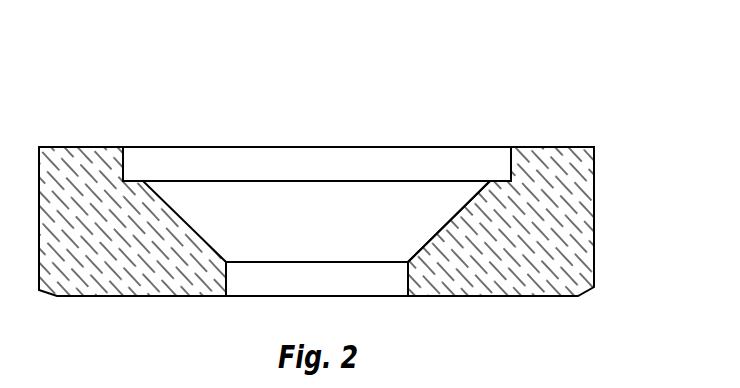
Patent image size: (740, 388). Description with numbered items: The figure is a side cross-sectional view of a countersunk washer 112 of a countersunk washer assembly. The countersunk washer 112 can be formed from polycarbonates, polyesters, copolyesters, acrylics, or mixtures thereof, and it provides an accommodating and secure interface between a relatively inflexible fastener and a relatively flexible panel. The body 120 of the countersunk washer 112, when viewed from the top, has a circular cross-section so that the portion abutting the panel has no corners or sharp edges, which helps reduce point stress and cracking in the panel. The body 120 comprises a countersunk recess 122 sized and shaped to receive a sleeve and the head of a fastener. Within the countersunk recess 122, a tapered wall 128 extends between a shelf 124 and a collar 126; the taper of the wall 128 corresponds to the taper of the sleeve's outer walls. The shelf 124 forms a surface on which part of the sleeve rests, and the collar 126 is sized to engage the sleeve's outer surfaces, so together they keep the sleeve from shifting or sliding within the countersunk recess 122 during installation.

The countersunk washer 112 is at (127, 87).
The body 120 is at (572, 150).
The countersunk recess 122 is at (335, 170).
The shelf 124 is at (138, 181).
The collar 126 is at (228, 280).
The tapered wall 128 is at (448, 213).